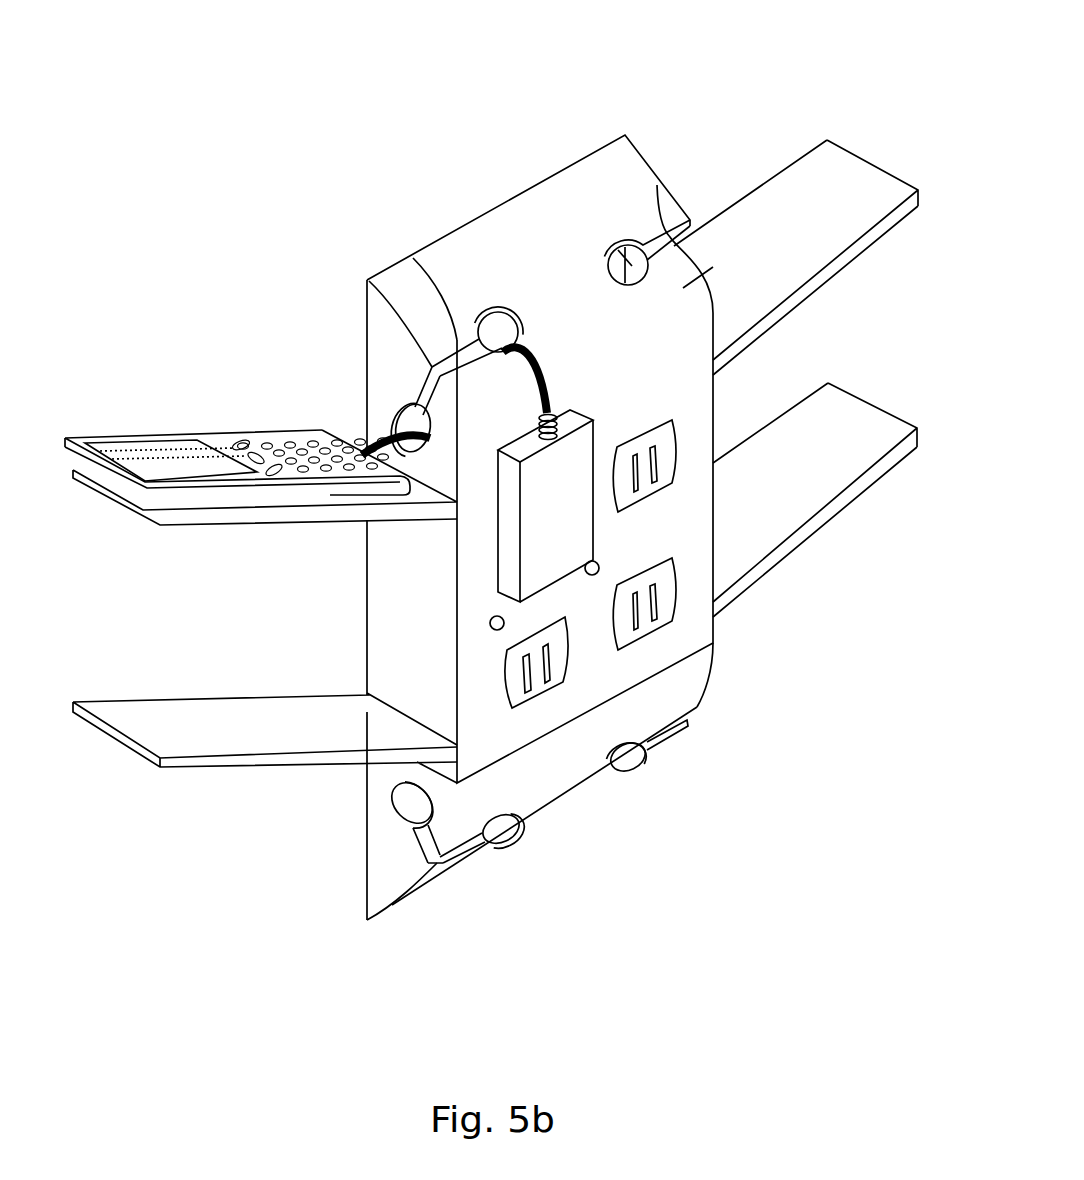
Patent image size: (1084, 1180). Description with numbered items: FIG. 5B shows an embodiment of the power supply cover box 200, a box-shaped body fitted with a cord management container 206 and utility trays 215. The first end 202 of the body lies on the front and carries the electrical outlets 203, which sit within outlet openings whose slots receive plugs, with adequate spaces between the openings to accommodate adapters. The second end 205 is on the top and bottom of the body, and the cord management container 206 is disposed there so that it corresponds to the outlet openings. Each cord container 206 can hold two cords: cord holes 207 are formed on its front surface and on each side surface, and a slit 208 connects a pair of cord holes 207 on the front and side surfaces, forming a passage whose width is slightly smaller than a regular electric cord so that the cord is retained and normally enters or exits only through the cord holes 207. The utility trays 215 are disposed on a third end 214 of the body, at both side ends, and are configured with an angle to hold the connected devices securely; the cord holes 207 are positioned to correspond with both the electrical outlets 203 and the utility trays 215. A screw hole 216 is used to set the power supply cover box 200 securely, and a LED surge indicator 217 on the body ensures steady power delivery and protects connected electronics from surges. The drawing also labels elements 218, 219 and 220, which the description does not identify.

The power supply cover box 200 is at (604, 42).
The first end 202 is at (477, 672).
The electrical outlet 203 is at (658, 418).
The second end 205 is at (689, 677).
The cord management container 206 is at (711, 292).
The cord holes 207 is at (618, 248).
The slits 208 is at (430, 362).
The third end 214 is at (393, 577).
The utility trays 215 is at (103, 725).
The screw hole 216 is at (666, 548).
The LED surge indicator 217 is at (490, 622).
The tablet device 218 is at (223, 440).
The power adapter plug 219 is at (500, 536).
The charging cable 220 is at (390, 440).